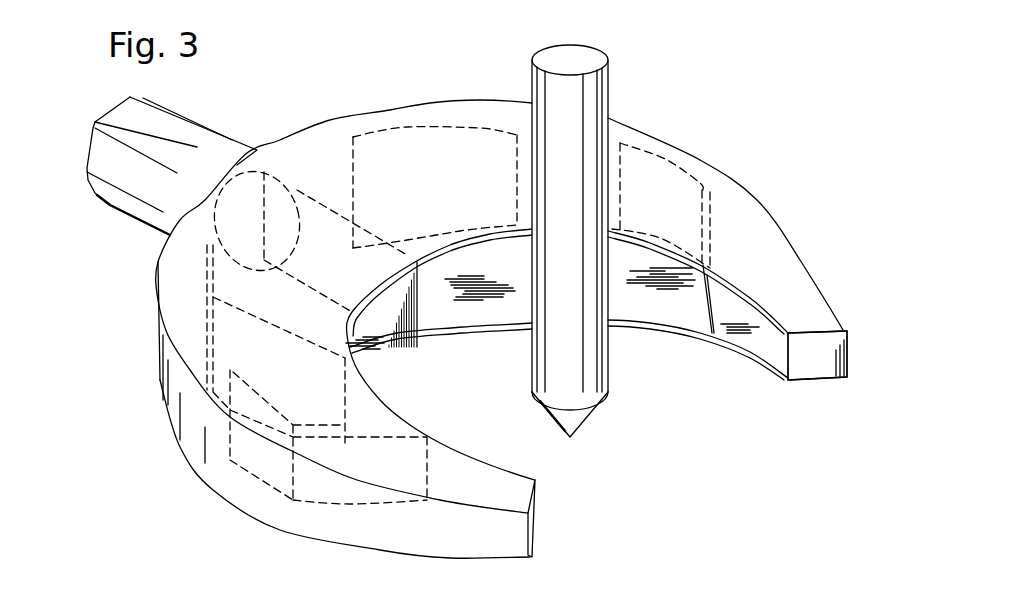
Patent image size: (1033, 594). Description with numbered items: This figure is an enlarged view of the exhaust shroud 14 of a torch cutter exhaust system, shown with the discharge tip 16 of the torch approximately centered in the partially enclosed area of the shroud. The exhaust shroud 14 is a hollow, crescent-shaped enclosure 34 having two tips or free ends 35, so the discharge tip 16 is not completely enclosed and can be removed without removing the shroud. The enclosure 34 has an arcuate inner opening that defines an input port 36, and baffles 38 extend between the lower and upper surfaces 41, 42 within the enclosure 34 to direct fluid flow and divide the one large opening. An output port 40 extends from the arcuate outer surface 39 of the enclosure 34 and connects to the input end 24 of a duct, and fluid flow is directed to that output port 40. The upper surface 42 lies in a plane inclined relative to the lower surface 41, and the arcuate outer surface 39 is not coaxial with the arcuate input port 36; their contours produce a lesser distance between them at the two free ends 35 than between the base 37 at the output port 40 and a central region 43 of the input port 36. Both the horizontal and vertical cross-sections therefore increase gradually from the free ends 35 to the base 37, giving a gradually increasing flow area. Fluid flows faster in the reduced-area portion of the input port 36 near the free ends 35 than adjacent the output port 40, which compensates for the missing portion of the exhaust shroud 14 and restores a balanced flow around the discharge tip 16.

The exhaust shroud 14 is at (785, 202).
The discharge tip 16 is at (570, 412).
The input end 24 is at (157, 182).
The enclosure 34 is at (187, 307).
The free ends 35 is at (528, 513).
The input port 36 is at (430, 320).
The base 37 is at (302, 130).
The baffles 38 is at (313, 197).
The arcuate outer surface 39 is at (195, 435).
The output port 40 is at (239, 192).
The lower surface 41 is at (737, 352).
The upper surface 42 is at (707, 177).
The central region 43 is at (441, 280).